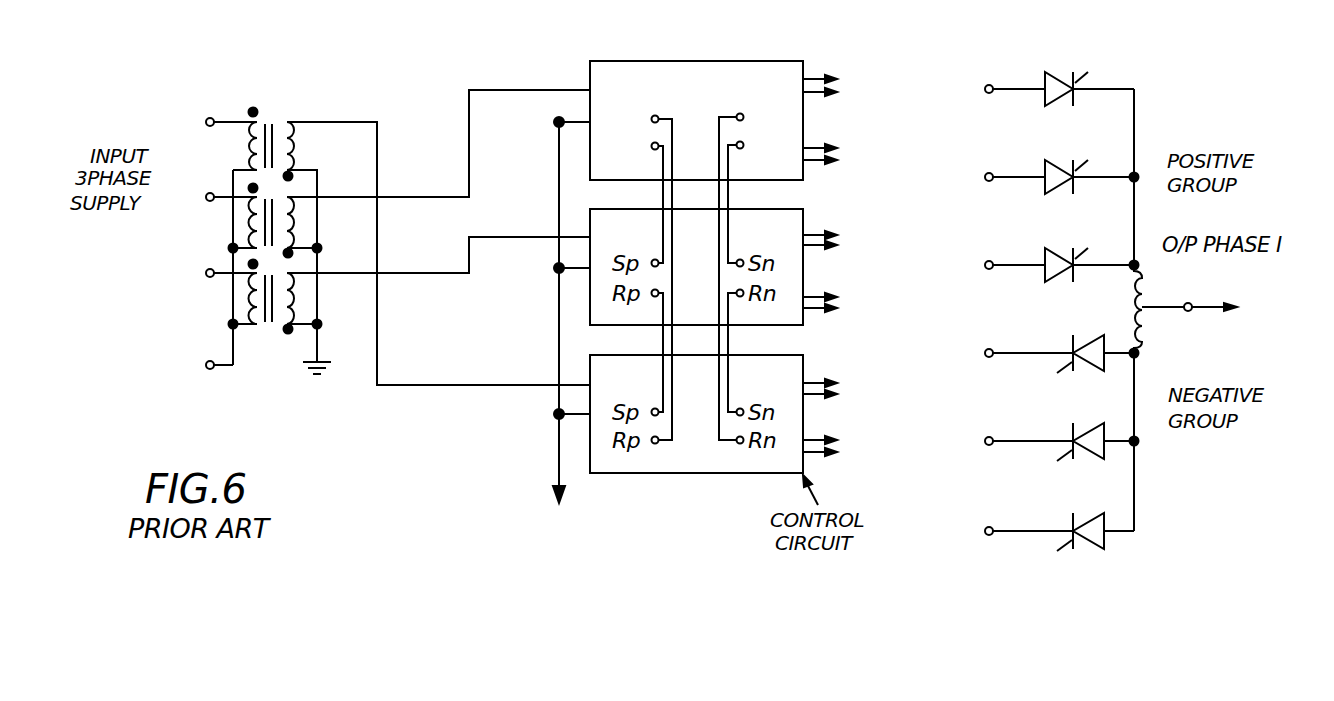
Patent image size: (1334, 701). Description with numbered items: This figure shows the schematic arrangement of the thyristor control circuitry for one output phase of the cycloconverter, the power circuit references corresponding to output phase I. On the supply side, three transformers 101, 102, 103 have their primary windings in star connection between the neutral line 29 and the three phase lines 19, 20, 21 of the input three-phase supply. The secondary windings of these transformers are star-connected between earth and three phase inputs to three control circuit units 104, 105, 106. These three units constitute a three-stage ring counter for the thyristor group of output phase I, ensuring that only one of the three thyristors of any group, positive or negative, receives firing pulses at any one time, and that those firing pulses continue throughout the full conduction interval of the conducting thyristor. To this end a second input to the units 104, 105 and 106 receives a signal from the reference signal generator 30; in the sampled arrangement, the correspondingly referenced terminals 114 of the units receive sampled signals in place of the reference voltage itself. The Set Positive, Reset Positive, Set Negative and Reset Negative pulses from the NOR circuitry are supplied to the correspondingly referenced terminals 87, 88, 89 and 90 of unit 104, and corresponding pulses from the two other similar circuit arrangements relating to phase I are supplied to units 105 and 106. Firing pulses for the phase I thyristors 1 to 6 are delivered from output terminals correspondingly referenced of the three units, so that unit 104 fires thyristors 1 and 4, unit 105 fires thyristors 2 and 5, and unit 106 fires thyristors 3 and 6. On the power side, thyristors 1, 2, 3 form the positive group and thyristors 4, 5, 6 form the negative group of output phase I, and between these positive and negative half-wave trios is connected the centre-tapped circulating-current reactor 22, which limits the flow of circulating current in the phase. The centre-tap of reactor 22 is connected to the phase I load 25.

The phase line 19 is at (224, 119).
The phase line 20 is at (224, 193).
The phase line 21 is at (224, 270).
The neutral line 29 is at (229, 356).
The transformer 101 is at (275, 131).
The transformer 102 is at (275, 200).
The transformer 103 is at (272, 302).
The control circuit unit 104 is at (727, 61).
The control circuit unit 105 is at (803, 210).
The control circuit unit 106 is at (803, 356).
The terminal 87 is at (651, 115).
The terminal 88 is at (654, 151).
The terminal 89 is at (744, 113).
The terminal 90 is at (740, 150).
The terminal 114 is at (537, 424).
The reference signal generator 30 is at (533, 521).
The thyristor 1 is at (968, 73).
The thyristor 2 is at (968, 191).
The thyristor 3 is at (968, 313).
The thyristor 4 is at (968, 271).
The thyristor 5 is at (968, 390).
The thyristor 6 is at (968, 508).
The centre-tapped circulating-current reactor 22 is at (1145, 293).
The phase I load 25 is at (1206, 309).